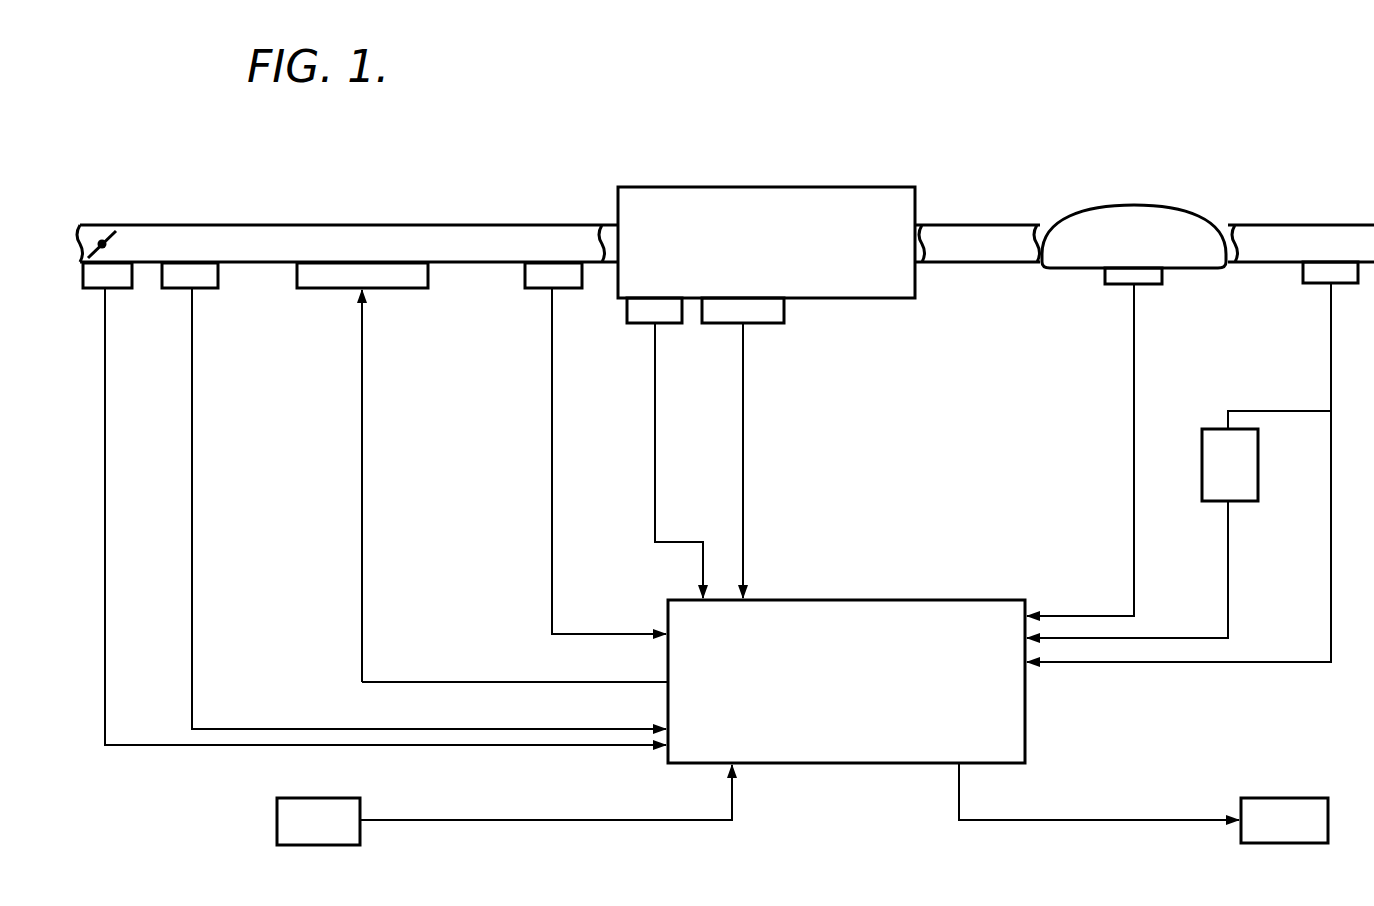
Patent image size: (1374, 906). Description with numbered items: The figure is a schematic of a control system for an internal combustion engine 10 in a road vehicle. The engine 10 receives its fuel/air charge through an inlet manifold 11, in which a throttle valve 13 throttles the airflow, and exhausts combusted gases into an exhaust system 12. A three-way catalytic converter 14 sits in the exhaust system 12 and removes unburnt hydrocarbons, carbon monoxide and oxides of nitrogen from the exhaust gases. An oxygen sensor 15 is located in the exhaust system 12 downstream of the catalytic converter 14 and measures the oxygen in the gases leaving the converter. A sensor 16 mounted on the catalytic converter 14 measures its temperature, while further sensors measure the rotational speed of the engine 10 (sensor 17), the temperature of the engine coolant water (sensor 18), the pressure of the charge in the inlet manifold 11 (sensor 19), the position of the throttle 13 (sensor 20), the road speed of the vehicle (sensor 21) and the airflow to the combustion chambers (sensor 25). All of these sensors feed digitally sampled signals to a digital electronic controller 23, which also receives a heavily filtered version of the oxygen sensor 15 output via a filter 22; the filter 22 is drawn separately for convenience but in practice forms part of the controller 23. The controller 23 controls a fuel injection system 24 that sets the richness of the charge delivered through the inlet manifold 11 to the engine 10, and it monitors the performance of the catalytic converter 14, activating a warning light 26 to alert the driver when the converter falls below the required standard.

The internal combustion engine 10 is at (778, 190).
The inlet manifold 11 is at (466, 225).
The exhaust system 12 is at (983, 225).
The throttle valve 13 is at (113, 227).
The catalytic converter 14 is at (1131, 208).
The oxygen sensor 15 is at (1300, 275).
The catalytic converter temperature sensor 16 is at (1105, 275).
The engine speed sensor 17 is at (727, 315).
The coolant temperature sensor 18 is at (630, 315).
The manifold pressure sensor 19 is at (525, 272).
The throttle position sensor 20 is at (113, 279).
The road speed sensor 21 is at (295, 800).
The filter 22 is at (1208, 455).
The digital electronic controller 23 is at (878, 604).
The fuel injection system 24 is at (300, 277).
The airflow sensor 25 is at (165, 278).
The warning light 26 is at (1280, 800).